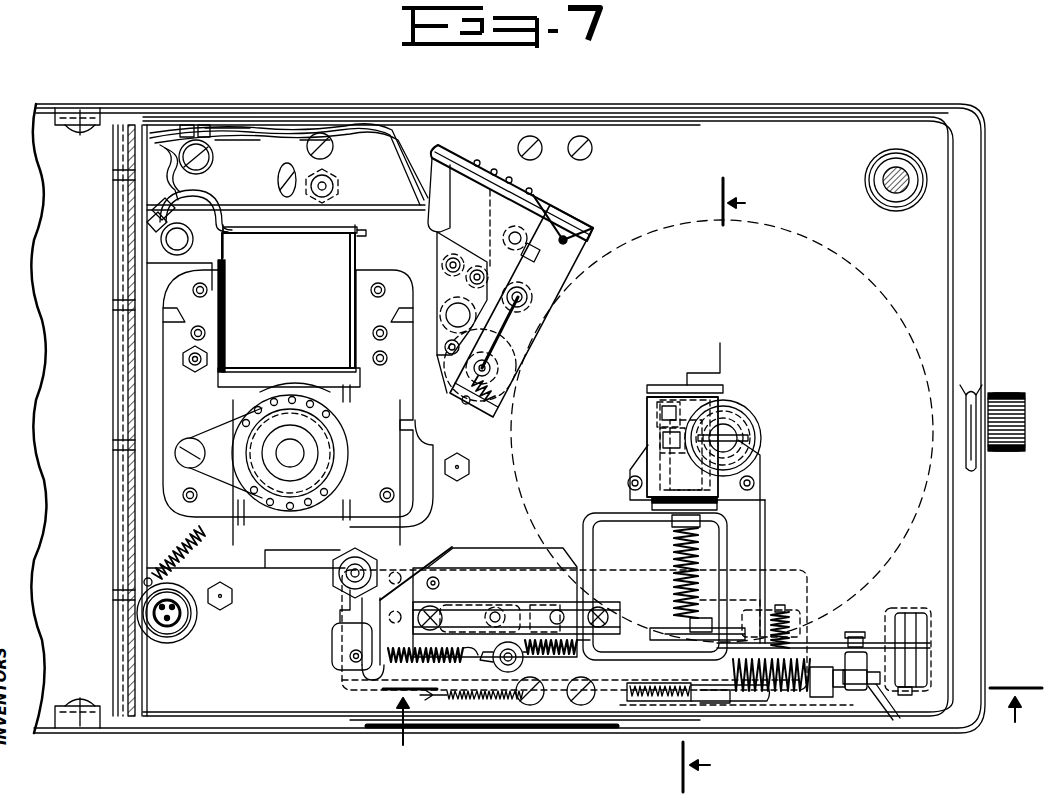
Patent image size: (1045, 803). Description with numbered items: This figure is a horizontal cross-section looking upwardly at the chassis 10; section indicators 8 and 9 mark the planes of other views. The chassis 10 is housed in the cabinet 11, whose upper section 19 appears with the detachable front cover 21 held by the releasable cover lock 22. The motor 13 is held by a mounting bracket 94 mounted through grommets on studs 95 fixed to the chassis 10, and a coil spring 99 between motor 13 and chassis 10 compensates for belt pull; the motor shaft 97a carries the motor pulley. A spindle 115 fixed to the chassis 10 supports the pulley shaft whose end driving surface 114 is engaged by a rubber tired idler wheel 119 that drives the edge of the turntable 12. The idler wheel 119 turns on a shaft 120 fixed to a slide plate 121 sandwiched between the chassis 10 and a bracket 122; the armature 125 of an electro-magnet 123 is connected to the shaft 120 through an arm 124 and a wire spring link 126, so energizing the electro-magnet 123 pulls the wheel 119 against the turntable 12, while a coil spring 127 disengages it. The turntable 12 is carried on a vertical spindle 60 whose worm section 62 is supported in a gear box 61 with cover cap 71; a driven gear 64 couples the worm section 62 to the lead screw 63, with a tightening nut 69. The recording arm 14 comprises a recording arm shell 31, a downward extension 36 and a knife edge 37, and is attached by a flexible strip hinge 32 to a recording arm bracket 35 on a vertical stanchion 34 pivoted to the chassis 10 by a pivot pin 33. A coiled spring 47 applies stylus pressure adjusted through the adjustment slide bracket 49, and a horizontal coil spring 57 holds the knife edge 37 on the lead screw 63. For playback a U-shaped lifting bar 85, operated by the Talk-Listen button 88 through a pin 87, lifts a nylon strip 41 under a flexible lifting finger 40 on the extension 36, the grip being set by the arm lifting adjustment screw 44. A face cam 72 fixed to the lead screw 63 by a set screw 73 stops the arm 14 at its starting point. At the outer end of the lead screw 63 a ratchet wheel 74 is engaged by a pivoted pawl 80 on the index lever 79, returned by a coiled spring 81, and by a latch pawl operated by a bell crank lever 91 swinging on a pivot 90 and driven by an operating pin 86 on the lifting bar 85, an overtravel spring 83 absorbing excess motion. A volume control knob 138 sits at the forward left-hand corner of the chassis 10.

The section line 8- 8 is at (724, 485).
The section line 9- 9 is at (712, 733).
The chassis 10 is at (958, 236).
The cabinet 11 is at (908, 106).
The turntable 12 is at (858, 272).
The motor 13 is at (170, 455).
The recording arm 14 is at (788, 568).
The upper section 19 is at (44, 108).
The front cover 21 is at (966, 108).
The cover lock 22 is at (985, 392).
The recording arm shell 31 is at (515, 568).
The flexible strip hinge 32 is at (418, 562).
The pivot pin 33 is at (340, 572).
The vertical stanchion 34 is at (338, 585).
The recording arm bracket 35 is at (333, 645).
The downward extension 36 is at (618, 585).
The knife edge 37 is at (688, 612).
The recording arm lifting finger 40 is at (530, 615).
The frictional nylon strip 41 is at (596, 607).
The arm lifting adjustment screw 44 is at (496, 612).
The coiled spring 47 is at (552, 660).
The adjustment slide bracket 49 is at (508, 672).
The horizontal coil spring 57 is at (382, 675).
The vertical spindle 60 is at (752, 420).
The gear box 61 is at (647, 422).
The worm section 62 is at (742, 430).
The lead screw 63 is at (672, 521).
The driven gear 64 is at (663, 440).
The tightening nut 69 is at (660, 410).
The cover cap 71 is at (722, 389).
The face cam 72 is at (655, 634).
The set screw 73 is at (700, 640).
The ratchet wheel 74 is at (684, 703).
The index lever 79 is at (815, 705).
The pivoted pawl 80 is at (612, 690).
The coiled spring 81 is at (460, 705).
The overtravel spring 83 is at (778, 690).
The lifting bar 85 is at (615, 513).
The operating pin 86 is at (860, 695).
The pin 87 is at (905, 695).
The Talk-Listen button 88 is at (920, 612).
The pivot 90 is at (850, 690).
The bell crank lever 91 is at (898, 718).
The mounting bracket 94 is at (242, 560).
The studs 95 is at (170, 242).
The motor shaft 97a is at (285, 450).
The coil spring 99 is at (160, 560).
The driving surface 114 is at (442, 300).
The spindle 115 is at (455, 300).
The idler wheel 119 is at (530, 330).
The shaft 120 is at (498, 366).
The slide plate 121 is at (574, 268).
The bracket 122 is at (535, 295).
The electro-magnet 123 is at (490, 175).
The arm 124 is at (548, 237).
The armature 125 is at (432, 170).
The wire spring link 126 is at (570, 252).
The coil spring 127 is at (500, 384).
The volume control knob 138 is at (912, 185).